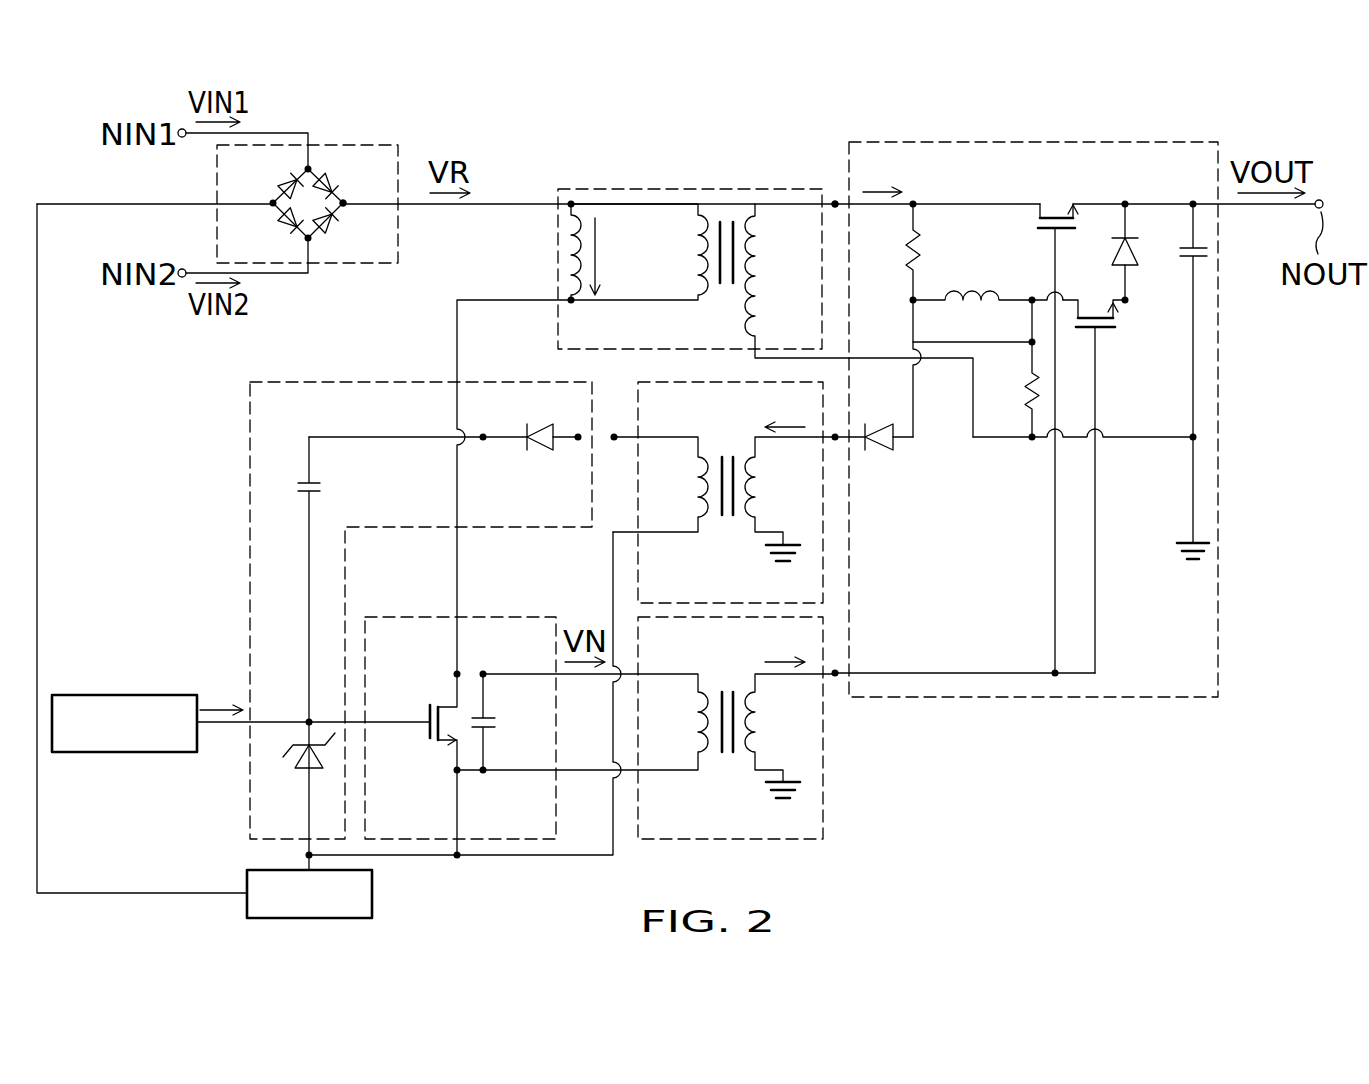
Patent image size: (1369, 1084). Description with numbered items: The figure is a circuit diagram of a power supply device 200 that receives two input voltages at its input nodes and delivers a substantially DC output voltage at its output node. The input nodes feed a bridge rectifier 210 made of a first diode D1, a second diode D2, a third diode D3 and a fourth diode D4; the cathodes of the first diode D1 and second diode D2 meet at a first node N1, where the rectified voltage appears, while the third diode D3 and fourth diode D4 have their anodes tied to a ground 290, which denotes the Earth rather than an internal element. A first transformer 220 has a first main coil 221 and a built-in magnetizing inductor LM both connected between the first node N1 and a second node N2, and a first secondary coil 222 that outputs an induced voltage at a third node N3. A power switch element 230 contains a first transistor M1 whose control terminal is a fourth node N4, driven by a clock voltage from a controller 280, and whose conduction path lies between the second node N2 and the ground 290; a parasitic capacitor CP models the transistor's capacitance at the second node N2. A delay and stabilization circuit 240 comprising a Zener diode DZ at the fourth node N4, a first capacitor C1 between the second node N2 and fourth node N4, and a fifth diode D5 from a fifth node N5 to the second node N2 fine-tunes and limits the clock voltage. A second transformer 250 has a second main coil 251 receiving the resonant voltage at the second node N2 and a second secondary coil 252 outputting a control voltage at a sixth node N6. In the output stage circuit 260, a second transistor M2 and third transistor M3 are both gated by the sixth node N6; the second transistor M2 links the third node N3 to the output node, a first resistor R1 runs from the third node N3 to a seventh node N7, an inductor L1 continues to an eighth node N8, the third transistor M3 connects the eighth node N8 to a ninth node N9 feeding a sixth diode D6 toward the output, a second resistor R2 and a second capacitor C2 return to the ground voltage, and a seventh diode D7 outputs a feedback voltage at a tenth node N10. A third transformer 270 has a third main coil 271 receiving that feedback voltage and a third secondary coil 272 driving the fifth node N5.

The power supply device 200 is at (90, 99).
The bridge rectifier 210 is at (332, 183).
The first transformer 220 is at (732, 293).
The first main coil 221 is at (698, 266).
The first secondary coil 222 is at (756, 266).
The power switch element 230 is at (460, 717).
The delay and stabilization circuit 240 is at (394, 600).
The second transformer 250 is at (699, 728).
The second main coil 251 is at (698, 737).
The second secondary coil 252 is at (756, 737).
The output stage circuit 260 is at (1025, 429).
The third transformer 270 is at (724, 476).
The third main coil 271 is at (756, 502).
The third secondary coil 272 is at (698, 502).
The controller 280 is at (52, 695).
The ground 290 is at (373, 893).
The first diode D1 is at (331, 180).
The second diode D2 is at (331, 226).
The third diode D3 is at (280, 182).
The fourth diode D4 is at (281, 224).
The fifth diode D5 is at (540, 453).
The sixth diode D6 is at (1112, 245).
The seventh diode D7 is at (884, 452).
The Zener diode DZ is at (291, 772).
The magnetizing inductor LM is at (570, 254).
The inductor L1 is at (966, 295).
The first resistor R1 is at (918, 262).
The second resistor R2 is at (1028, 395).
The first capacitor C1 is at (313, 482).
The second capacitor C2 is at (1180, 258).
The parasitic capacitor CP is at (495, 716).
The first transistor M1 is at (435, 704).
The second transistor M2 is at (1054, 214).
The third transistor M3 is at (1094, 332).
The first node N1 is at (346, 206).
The second node N2 is at (455, 671).
The third node N3 is at (835, 200).
The fourth node N4 is at (307, 719).
The fifth node N5 is at (577, 434).
The sixth node N6 is at (836, 677).
The seventh node N7 is at (913, 304).
The eighth node N8 is at (1030, 304).
The ninth node N9 is at (1126, 305).
The tenth node N10 is at (835, 441).